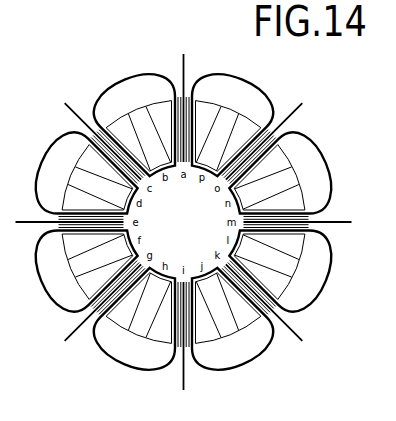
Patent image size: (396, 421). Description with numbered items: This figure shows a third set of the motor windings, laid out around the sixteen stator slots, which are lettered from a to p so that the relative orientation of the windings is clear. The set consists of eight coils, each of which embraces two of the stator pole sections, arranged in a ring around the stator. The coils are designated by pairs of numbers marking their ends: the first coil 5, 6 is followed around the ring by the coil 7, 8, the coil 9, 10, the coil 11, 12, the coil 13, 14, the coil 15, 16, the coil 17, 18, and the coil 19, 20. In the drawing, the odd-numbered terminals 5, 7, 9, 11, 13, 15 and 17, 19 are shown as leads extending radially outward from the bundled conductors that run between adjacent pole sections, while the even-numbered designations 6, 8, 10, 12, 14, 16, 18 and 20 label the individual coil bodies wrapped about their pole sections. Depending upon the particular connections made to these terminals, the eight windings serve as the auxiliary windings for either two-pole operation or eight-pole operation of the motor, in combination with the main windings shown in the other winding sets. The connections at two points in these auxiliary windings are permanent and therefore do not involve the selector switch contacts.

The coil terminal 5 is at (65, 91).
The coil terminal 6 is at (61, 203).
The coil terminal 7 is at (20, 223).
The coil terminal 8 is at (81, 299).
The coil terminal 9 is at (69, 343).
The coil terminal 10 is at (173, 347).
The coil terminal 11 is at (193, 343).
The coil terminal 12 is at (263, 323).
The coil terminal 13 is at (300, 341).
The coil terminal 14 is at (304, 233).
The coil terminal 15 is at (333, 219).
The coil terminal 16 is at (282, 141).
The coil terminal 17 is at (302, 100).
The coil terminal 18 is at (198, 93).
The coil terminal 19 is at (184, 56).
The coil terminal 20 is at (105, 124).